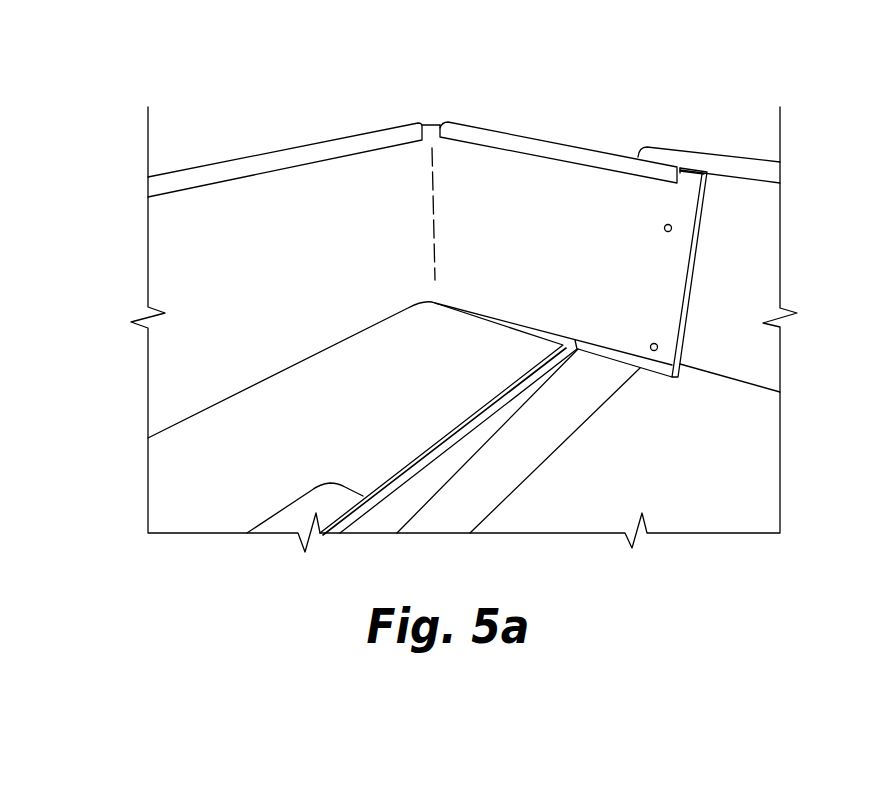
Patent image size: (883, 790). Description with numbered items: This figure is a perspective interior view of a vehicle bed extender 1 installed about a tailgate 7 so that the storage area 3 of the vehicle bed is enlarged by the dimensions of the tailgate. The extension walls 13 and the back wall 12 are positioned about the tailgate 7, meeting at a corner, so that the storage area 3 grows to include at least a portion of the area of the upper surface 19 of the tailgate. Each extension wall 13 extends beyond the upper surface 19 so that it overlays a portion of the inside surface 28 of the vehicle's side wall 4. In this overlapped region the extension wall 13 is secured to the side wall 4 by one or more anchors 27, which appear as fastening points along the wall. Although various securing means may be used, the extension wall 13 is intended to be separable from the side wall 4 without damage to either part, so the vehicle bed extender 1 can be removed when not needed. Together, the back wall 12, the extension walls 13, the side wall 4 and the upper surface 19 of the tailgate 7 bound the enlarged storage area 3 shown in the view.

The vehicle bed extender 1 is at (348, 88).
The back wall 12 is at (312, 207).
The extension wall 13 is at (542, 212).
The side wall 4 is at (752, 165).
The inside surface 28 is at (752, 267).
The anchor 27 is at (672, 228).
The tailgate 7 is at (335, 382).
The upper surface 19 is at (217, 462).
The storage area 3 is at (672, 480).